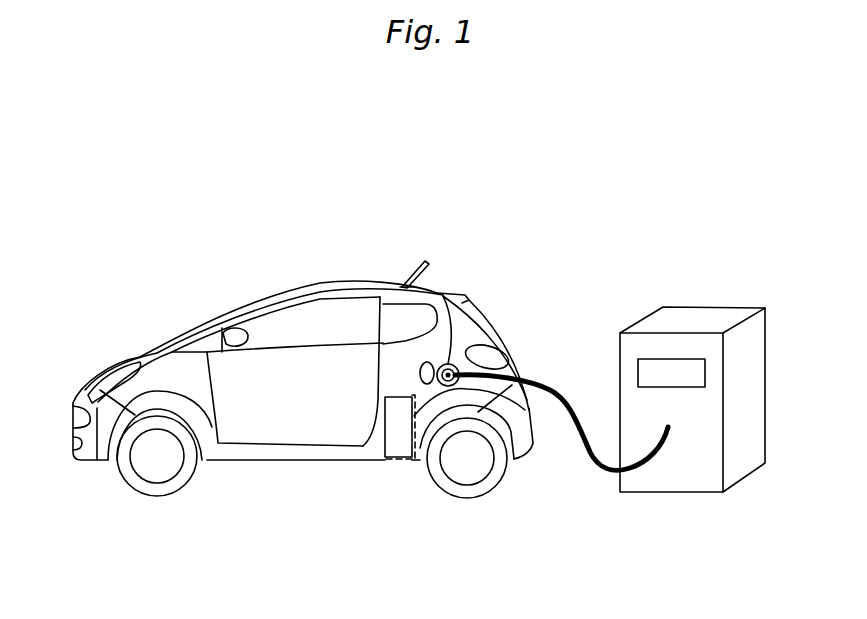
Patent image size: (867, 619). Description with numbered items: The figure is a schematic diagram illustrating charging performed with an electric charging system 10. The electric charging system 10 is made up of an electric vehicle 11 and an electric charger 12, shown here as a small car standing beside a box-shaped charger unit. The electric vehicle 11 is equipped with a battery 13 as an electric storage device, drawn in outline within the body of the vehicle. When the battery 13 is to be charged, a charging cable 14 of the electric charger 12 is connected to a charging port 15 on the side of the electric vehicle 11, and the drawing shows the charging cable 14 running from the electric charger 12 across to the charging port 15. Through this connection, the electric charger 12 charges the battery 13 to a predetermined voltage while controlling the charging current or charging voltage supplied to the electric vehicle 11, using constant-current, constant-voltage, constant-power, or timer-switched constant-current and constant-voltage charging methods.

The electric charging system 10 is at (498, 213).
The electric vehicle 11 is at (305, 283).
The electric charger 12 is at (676, 310).
The battery 13 is at (395, 462).
The charging cable 14 is at (580, 440).
The charging port 15 is at (453, 362).